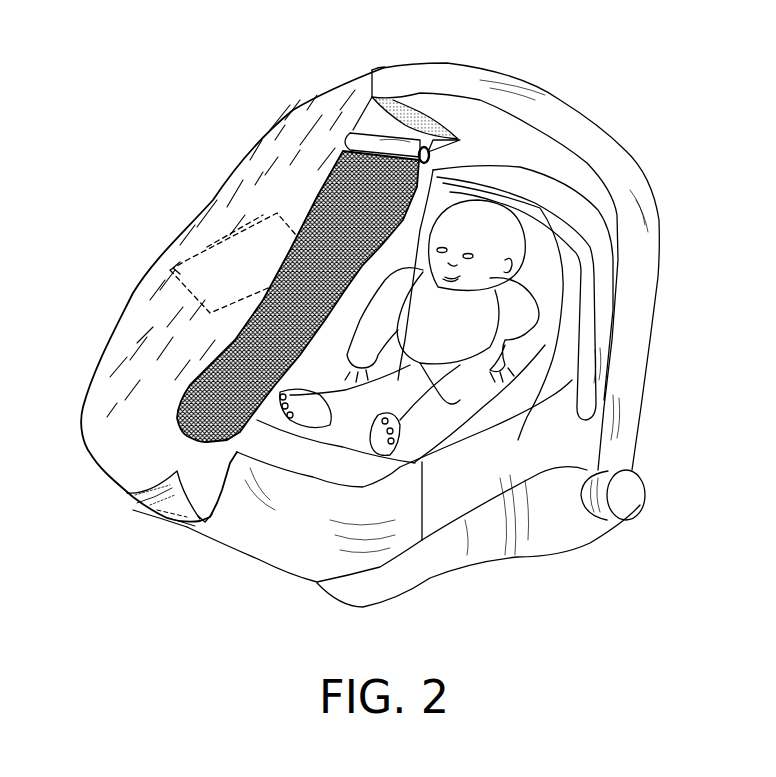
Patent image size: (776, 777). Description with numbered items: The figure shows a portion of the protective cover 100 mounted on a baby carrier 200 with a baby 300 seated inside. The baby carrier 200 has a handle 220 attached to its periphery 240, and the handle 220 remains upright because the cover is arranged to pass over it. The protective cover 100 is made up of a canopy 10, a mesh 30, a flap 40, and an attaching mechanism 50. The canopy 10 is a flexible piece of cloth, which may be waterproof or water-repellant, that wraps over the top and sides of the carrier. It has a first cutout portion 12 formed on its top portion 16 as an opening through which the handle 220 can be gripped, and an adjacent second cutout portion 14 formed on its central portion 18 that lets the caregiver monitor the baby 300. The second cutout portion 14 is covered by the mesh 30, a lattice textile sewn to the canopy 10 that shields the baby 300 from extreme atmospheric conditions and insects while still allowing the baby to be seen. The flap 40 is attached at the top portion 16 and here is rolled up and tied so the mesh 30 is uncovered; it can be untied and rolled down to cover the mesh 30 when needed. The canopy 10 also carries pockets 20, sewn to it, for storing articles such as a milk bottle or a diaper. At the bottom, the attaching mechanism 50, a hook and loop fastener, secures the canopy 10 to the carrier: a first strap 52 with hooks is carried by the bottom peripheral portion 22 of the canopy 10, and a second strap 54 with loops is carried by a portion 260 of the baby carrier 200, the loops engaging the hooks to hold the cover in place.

The protective cover 100 is at (291, 113).
The canopy 10 is at (82, 423).
The first cutout portion 12 is at (383, 122).
The second cutout portion 14 is at (240, 330).
The top portion 16 is at (426, 142).
The central portion 18 is at (300, 222).
The pockets 20 is at (210, 280).
The bottom peripheral portion 22 is at (203, 524).
The mesh 30 is at (343, 188).
The flap 40 is at (352, 132).
The attaching mechanism 50 is at (155, 530).
The first strap 52 is at (153, 513).
The second strap 54 is at (193, 523).
The baby carrier 200 is at (657, 181).
The handle 220 is at (633, 264).
The periphery 240 is at (568, 533).
The portion of the baby carrier 260 is at (212, 524).
The baby 300 is at (523, 303).